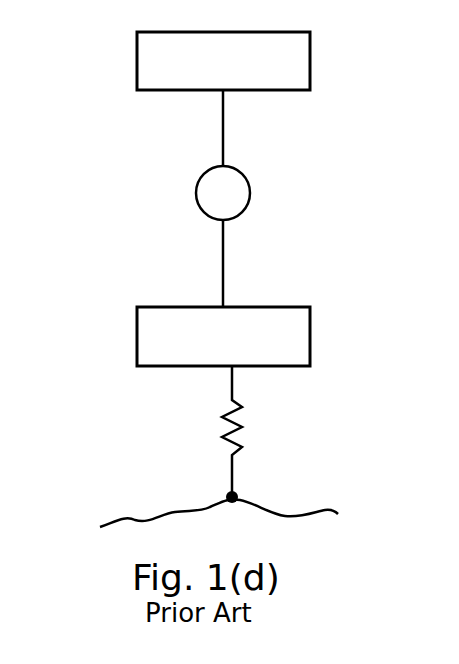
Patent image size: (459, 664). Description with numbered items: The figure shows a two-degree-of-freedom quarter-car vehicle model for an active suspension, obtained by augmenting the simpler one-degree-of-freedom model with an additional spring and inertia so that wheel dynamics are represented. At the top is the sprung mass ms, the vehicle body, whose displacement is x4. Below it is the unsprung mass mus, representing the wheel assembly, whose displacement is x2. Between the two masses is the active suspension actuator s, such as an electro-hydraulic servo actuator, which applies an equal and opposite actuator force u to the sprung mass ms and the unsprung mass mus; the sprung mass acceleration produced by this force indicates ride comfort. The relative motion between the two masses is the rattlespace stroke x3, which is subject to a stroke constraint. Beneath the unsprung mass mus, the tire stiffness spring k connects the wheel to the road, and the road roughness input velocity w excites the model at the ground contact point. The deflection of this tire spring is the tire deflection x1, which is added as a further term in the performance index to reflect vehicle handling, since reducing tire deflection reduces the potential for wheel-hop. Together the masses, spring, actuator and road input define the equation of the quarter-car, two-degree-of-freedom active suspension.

The sprung mass ms is at (223, 61).
The unsprung mass mus is at (223, 336).
The active suspension actuator s is at (223, 198).
The actuator force u is at (239, 102).
The tire deflection x1 is at (128, 365).
The unsprung mass displacement x2 is at (347, 294).
The rattlespace stroke x3 is at (128, 88).
The sprung mass displacement x4 is at (349, 16).
The tire stiffness spring k is at (232, 431).
The road roughness input velocity w is at (269, 469).